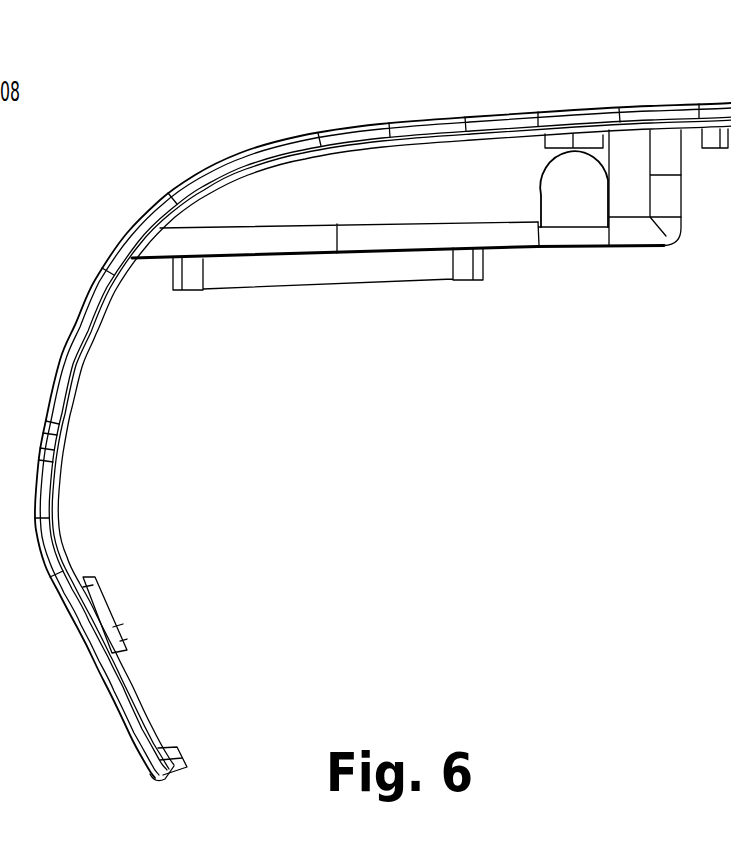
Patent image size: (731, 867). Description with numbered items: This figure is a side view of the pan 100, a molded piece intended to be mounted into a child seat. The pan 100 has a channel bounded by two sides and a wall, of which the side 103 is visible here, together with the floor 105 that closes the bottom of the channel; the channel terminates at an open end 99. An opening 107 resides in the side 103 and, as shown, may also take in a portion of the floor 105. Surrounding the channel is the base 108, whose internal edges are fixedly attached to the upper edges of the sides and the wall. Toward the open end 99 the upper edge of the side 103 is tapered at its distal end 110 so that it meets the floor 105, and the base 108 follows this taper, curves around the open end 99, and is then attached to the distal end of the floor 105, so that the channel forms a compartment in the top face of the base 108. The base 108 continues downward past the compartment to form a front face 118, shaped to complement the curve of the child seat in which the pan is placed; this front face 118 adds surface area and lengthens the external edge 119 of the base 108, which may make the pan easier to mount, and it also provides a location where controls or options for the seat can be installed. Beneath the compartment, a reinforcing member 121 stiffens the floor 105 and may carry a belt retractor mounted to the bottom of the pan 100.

The open end 99 is at (150, 180).
The pan 100 is at (510, 405).
The side 103 is at (363, 172).
The floor 105 is at (513, 250).
The opening 107 is at (603, 203).
The base 108 is at (344, 126).
The distal end 110 is at (283, 172).
The front face 118 is at (36, 476).
The external edge 119 is at (68, 362).
The reinforcing member 121 is at (367, 268).